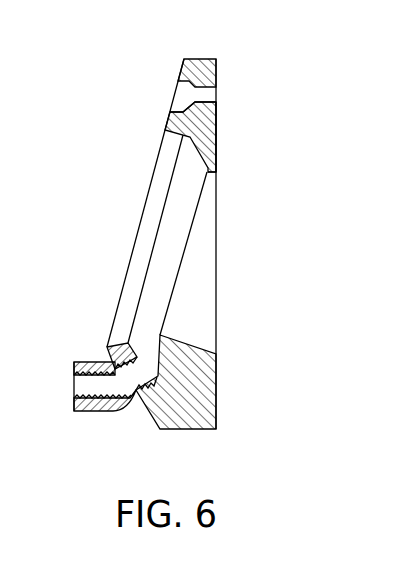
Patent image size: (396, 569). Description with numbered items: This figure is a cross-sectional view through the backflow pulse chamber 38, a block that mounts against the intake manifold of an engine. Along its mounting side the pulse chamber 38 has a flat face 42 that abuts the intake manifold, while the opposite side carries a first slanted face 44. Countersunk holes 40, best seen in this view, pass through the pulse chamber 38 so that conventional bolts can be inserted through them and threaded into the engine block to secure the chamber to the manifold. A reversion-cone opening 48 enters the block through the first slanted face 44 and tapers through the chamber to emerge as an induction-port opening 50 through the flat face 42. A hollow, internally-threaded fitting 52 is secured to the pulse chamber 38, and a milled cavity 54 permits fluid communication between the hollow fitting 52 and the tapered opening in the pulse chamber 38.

The backflow pulse chamber 38 is at (203, 118).
The countersunk holes 40 is at (182, 88).
The flat face 42 is at (217, 147).
The first slanted face 44 is at (168, 113).
The reversion-cone opening 48 is at (178, 134).
The induction-port opening 50 is at (193, 355).
The hollow internally-threaded fitting 52 is at (92, 361).
The cavity 54 is at (150, 352).